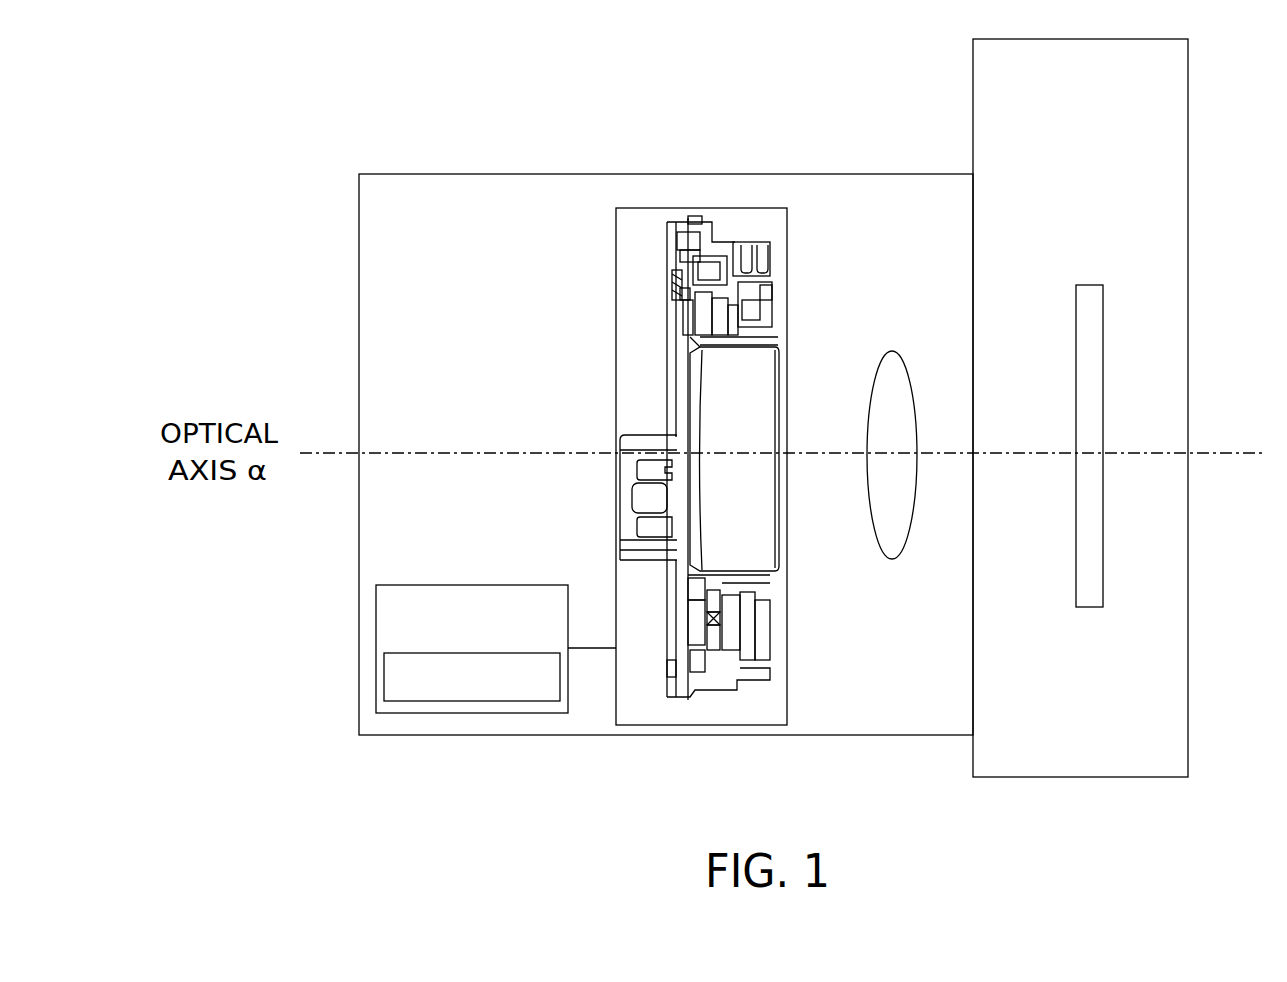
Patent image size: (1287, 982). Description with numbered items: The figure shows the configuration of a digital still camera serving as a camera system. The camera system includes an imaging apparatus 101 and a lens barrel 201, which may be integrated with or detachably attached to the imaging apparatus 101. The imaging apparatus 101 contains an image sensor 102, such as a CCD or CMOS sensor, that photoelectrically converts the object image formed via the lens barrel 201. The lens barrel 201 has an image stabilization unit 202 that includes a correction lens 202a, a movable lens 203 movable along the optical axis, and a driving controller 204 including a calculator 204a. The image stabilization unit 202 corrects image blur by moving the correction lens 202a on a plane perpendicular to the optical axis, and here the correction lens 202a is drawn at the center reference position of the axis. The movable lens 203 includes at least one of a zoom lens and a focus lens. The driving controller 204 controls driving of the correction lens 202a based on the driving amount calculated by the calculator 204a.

The imaging apparatus 101 is at (977, 146).
The image sensor 102 is at (1088, 285).
The lens barrel 201 is at (665, 735).
The image stabilization unit 202 is at (643, 208).
The correction lens 202a is at (775, 520).
The movable lens 203 is at (892, 352).
The driving controller 204 is at (376, 630).
The calculator 204a is at (384, 678).